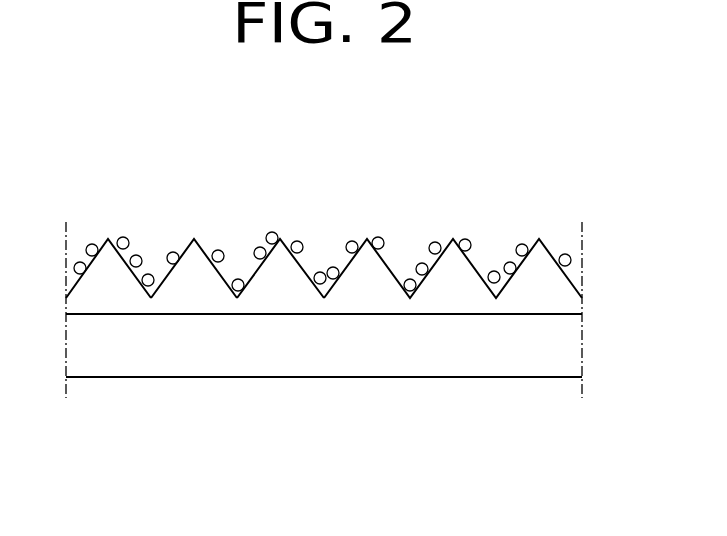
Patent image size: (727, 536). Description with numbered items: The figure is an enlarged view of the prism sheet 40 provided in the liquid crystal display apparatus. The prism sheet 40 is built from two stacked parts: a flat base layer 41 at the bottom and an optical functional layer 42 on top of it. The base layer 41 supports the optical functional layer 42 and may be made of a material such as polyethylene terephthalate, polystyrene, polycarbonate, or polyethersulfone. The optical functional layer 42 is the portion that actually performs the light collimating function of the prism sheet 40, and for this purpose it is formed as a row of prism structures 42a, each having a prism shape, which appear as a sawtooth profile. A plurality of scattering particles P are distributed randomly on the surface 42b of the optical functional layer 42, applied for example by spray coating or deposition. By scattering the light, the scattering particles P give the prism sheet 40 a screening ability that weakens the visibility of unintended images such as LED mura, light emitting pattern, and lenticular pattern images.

The prism sheet 40 is at (351, 144).
The base layer 41 is at (562, 348).
The optical functional layer 42 is at (562, 292).
The prism structures 42a is at (187, 260).
The surface 42b is at (311, 262).
The scattering particles P is at (381, 238).